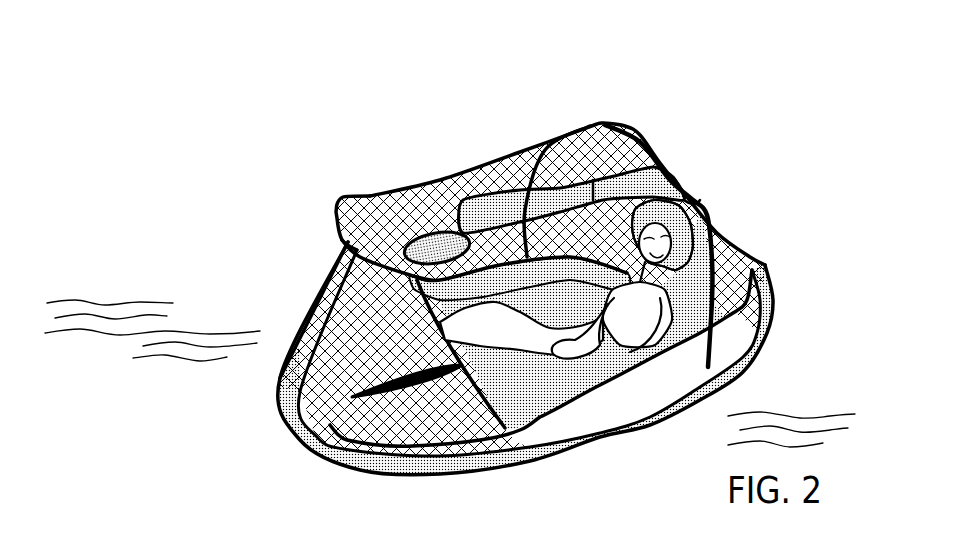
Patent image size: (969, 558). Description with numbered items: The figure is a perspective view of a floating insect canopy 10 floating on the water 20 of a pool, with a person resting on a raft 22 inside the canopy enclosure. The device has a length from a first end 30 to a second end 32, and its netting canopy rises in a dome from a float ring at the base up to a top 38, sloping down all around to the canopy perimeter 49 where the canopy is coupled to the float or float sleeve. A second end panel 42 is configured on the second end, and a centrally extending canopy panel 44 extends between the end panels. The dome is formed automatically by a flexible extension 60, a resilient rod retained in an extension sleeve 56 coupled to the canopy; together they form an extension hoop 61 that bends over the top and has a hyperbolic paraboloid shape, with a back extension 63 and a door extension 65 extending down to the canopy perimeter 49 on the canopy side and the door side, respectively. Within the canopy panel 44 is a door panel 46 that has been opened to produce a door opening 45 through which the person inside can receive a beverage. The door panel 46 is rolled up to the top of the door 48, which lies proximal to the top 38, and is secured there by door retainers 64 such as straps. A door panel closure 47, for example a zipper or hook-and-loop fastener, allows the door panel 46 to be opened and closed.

The floating insect canopy 10 is at (388, 173).
The water 20 is at (108, 335).
The raft 22 is at (610, 358).
The first end 30 is at (763, 263).
The second end 32 is at (293, 375).
The top 38 is at (453, 180).
The second end panel 42 is at (310, 310).
The canopy panel 44 is at (322, 272).
The door opening 45 is at (583, 403).
The door panel 46 is at (497, 173).
The door panel closure 47 is at (693, 193).
The top of the door 48 is at (640, 137).
The canopy perimeter 49 is at (293, 413).
The extension sleeve 56 is at (507, 430).
The flexible extension 60 is at (342, 193).
The extension hoop 61 is at (650, 136).
The back extension 63 is at (540, 145).
The door retainers 64 is at (447, 177).
The door extension 65 is at (697, 200).